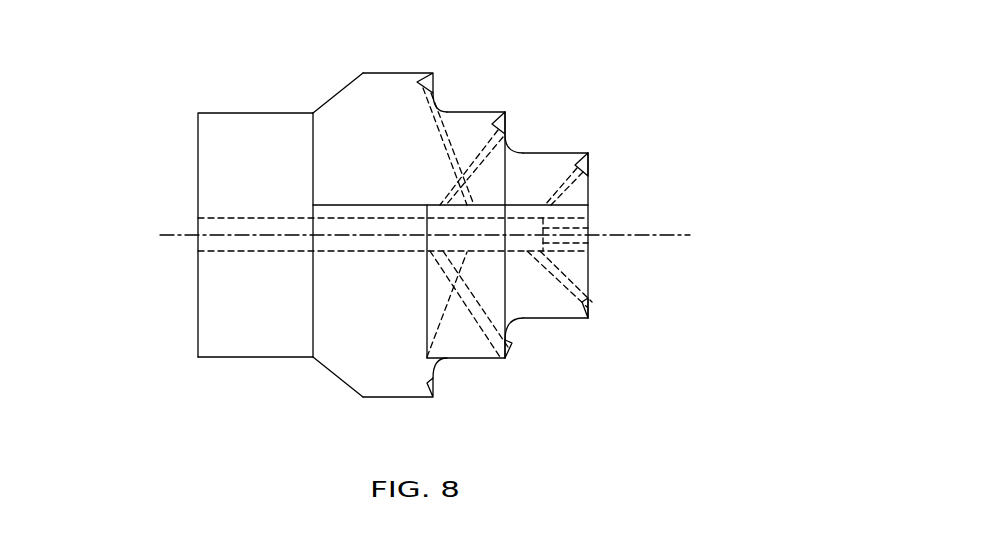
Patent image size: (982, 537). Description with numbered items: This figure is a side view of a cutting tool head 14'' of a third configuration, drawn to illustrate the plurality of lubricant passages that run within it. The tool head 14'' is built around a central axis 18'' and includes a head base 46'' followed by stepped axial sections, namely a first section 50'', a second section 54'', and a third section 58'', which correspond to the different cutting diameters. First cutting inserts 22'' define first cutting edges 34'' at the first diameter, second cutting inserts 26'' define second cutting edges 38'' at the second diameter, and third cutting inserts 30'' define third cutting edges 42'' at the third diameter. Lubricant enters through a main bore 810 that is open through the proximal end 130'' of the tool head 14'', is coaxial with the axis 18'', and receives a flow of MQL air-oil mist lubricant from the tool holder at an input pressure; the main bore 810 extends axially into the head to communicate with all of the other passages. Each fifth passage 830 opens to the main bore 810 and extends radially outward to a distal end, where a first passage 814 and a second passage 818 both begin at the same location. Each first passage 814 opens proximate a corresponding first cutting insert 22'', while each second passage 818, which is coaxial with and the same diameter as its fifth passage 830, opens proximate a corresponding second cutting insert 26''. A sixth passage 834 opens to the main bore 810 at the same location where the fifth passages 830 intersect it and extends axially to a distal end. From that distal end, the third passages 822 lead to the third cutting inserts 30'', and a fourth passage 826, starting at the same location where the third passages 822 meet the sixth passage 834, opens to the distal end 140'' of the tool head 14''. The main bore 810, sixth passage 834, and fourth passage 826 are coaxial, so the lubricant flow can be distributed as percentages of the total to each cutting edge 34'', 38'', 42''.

The proximal end 130'' is at (189, 216).
The head base 46'' is at (234, 381).
The cutting tool head 14'' is at (310, 394).
The first section 50'' is at (328, 75).
The main bore 810 is at (247, 213).
The first passages 814 is at (427, 108).
The first cutting inserts 22'' is at (445, 203).
The first cutting edges 34'' is at (492, 222).
The second section 54'' is at (466, 211).
The second cutting inserts 26'' is at (555, 194).
The second cutting edges 38'' is at (560, 230).
The third cutting inserts 30'' is at (610, 203).
The third cutting edges 42'' is at (646, 235).
The third section 58'' is at (512, 108).
The second passages 818 is at (487, 158).
The third passages 822 is at (593, 185).
The distal end 140'' is at (700, 224).
The fourth passage 826 is at (580, 227).
The axis 18'' is at (455, 272).
The fifth passages 830 is at (458, 190).
The sixth passage 834 is at (467, 205).